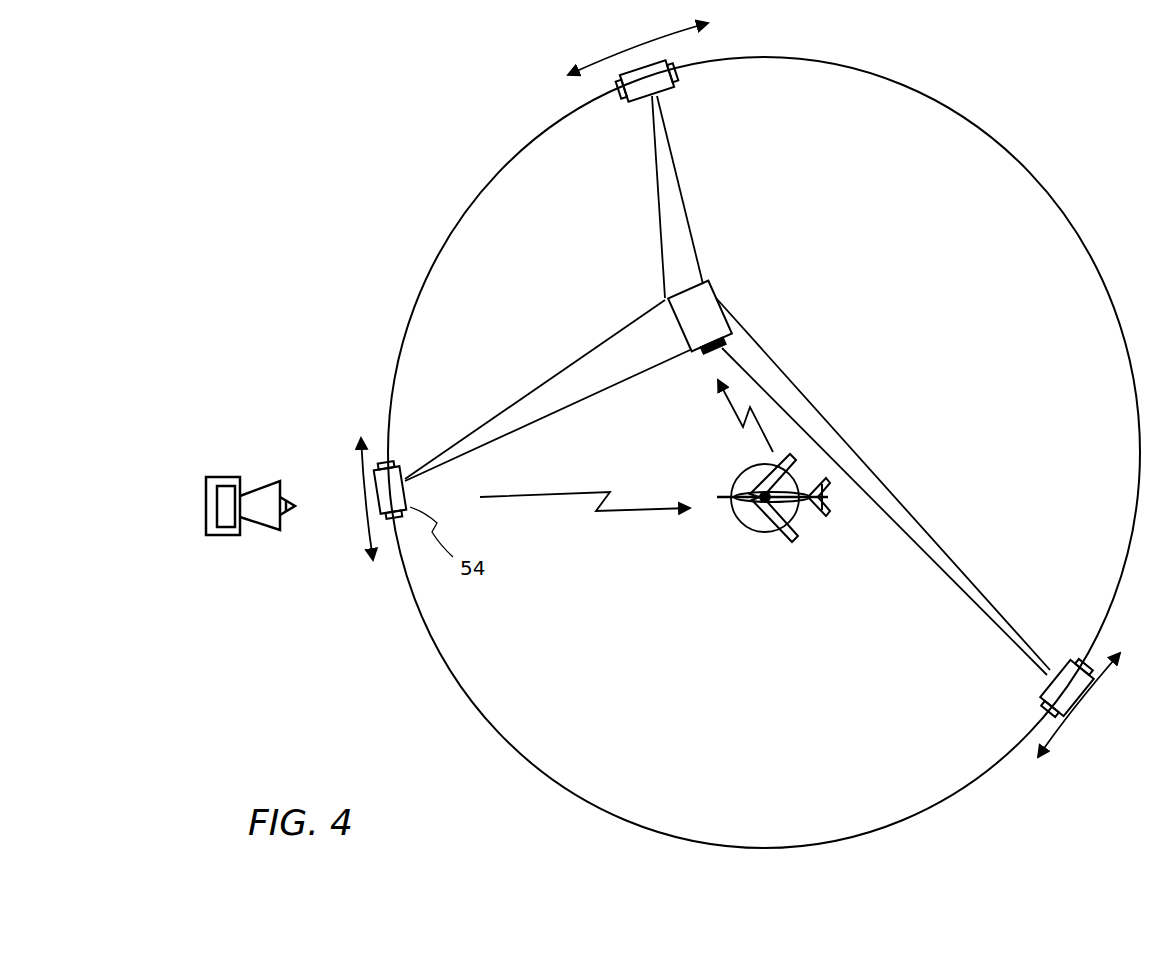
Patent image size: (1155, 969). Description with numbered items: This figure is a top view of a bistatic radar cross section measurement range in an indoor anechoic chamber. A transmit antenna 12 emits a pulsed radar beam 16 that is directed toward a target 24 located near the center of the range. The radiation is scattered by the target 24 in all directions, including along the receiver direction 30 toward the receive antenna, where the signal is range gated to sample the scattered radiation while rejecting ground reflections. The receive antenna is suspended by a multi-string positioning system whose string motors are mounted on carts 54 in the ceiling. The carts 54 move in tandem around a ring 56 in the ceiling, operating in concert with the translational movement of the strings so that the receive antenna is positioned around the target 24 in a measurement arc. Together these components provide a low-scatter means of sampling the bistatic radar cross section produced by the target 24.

The transmit antenna 12 is at (222, 477).
The pulsed radar beam 16 is at (607, 514).
The target 24 is at (808, 522).
The receiver direction 30 is at (743, 417).
The carts 54 is at (668, 88).
The ring 56 is at (1035, 182).